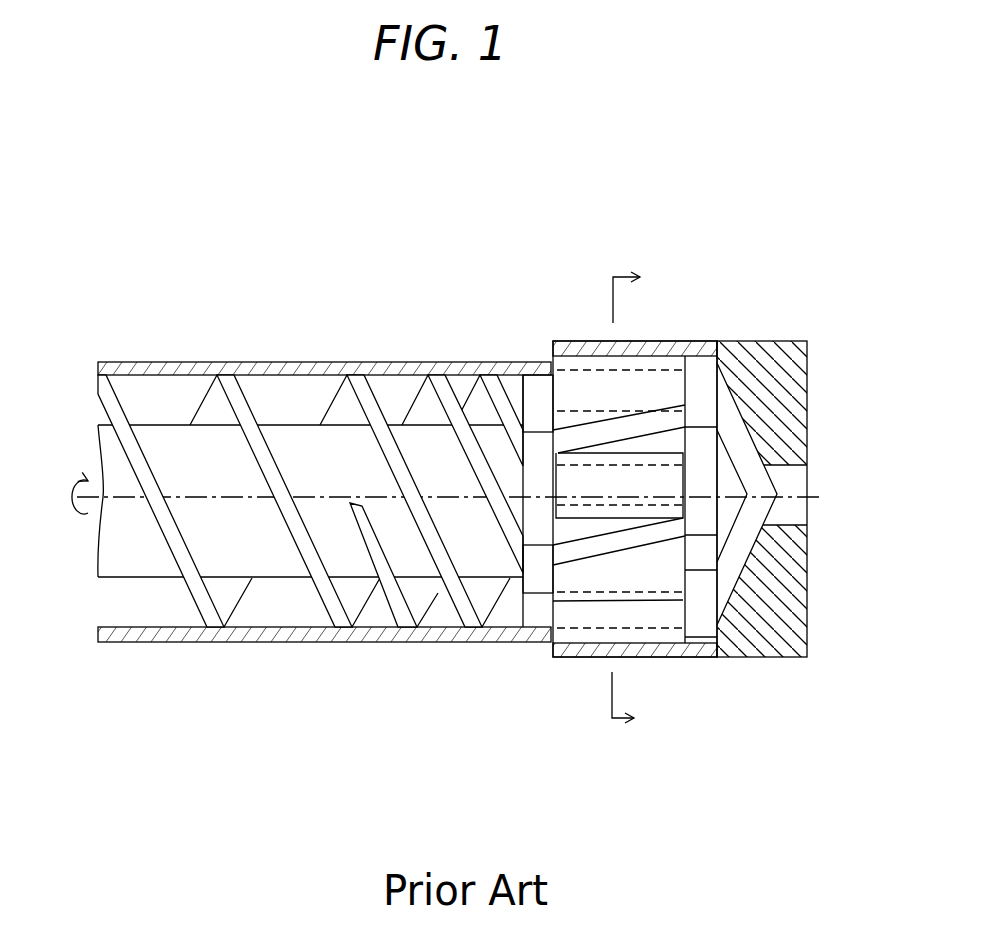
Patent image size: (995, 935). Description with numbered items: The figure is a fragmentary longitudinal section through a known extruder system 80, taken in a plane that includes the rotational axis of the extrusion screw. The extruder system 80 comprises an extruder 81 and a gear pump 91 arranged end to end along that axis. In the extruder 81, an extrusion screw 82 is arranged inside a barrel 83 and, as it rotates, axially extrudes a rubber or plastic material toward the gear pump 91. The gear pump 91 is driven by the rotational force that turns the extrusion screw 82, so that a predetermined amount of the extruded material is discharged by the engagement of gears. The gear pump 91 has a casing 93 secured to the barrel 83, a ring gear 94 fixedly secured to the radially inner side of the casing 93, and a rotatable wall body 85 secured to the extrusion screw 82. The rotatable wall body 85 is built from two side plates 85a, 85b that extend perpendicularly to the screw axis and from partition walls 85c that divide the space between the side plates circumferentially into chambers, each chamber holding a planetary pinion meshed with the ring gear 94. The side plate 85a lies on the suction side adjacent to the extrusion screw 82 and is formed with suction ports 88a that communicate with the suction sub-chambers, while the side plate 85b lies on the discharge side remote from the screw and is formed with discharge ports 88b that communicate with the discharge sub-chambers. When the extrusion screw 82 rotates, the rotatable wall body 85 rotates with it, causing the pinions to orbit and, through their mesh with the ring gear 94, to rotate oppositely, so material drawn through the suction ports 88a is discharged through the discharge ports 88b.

The extruder system 80 is at (225, 227).
The extruder 81 is at (173, 320).
The extrusion screw 82 is at (302, 455).
The barrel 83 is at (208, 368).
The rotatable wall body 85 is at (528, 683).
The side plate 85a is at (537, 577).
The side plate 85b is at (702, 501).
The partition walls 85c is at (627, 427).
The suction ports 88a is at (538, 527).
The discharge ports 88b is at (700, 552).
The gear pump 91 is at (772, 270).
The casing 93 is at (565, 342).
The ring gear 94 is at (597, 342).